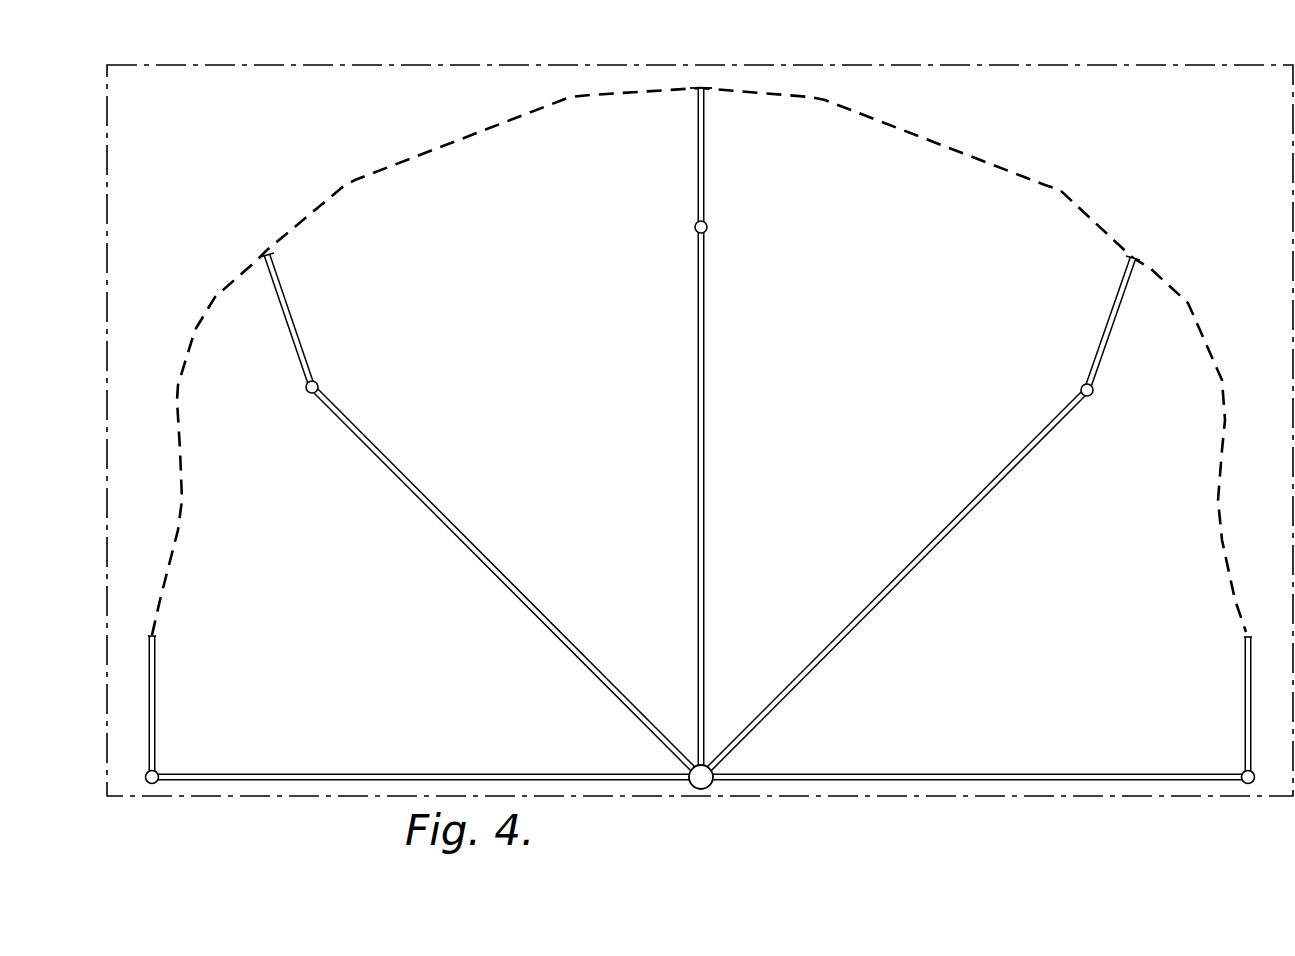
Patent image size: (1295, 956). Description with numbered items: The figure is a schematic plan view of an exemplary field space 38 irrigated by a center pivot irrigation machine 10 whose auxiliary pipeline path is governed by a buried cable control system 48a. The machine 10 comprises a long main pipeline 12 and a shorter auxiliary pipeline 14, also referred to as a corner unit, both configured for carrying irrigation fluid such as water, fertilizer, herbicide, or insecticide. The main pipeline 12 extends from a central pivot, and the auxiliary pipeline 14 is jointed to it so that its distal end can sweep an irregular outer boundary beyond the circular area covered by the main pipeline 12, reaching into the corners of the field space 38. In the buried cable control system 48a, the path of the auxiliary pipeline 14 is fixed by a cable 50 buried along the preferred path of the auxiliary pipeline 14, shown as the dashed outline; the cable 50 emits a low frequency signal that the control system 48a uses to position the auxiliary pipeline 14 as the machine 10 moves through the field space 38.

The center pivot irrigation machine 10 is at (700, 438).
The main pipeline 12 is at (703, 442).
The auxiliary pipeline 14 is at (697, 187).
The field space 38 is at (243, 118).
The buried cable control system 48a is at (1158, 58).
The buried cable 50 is at (1095, 222).